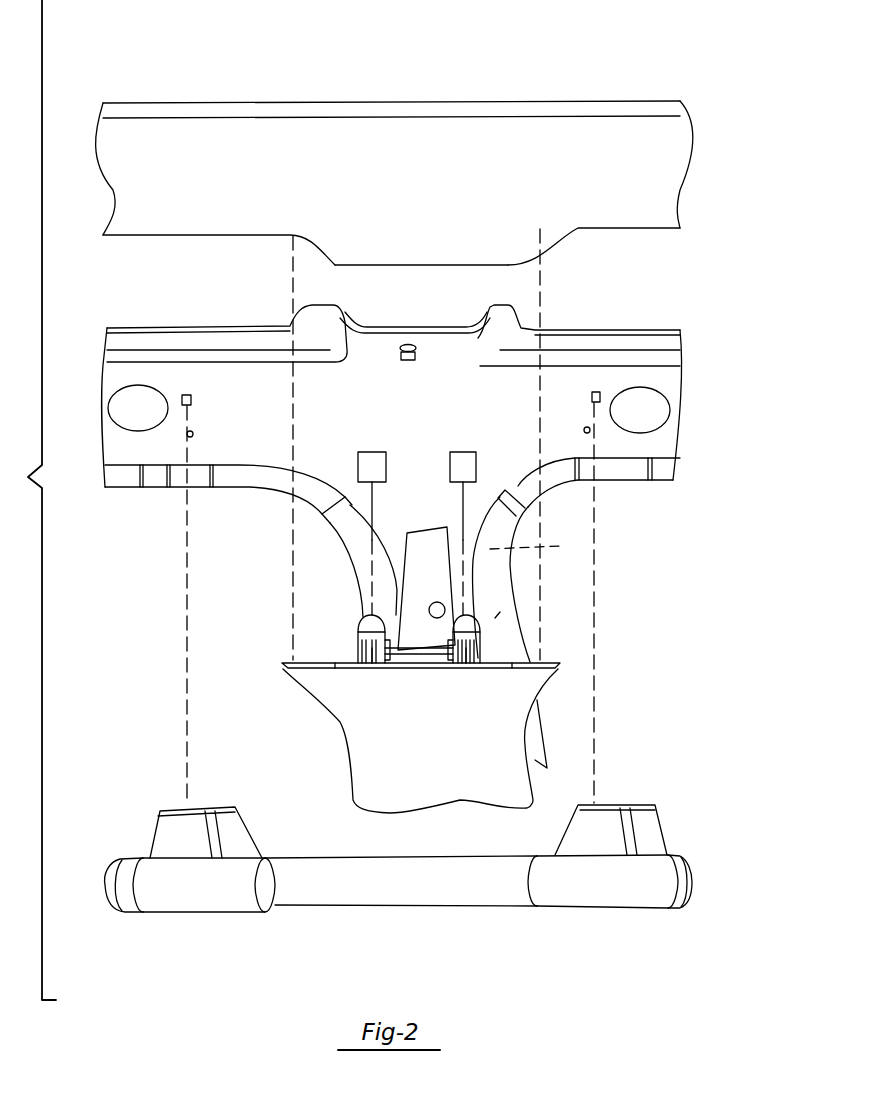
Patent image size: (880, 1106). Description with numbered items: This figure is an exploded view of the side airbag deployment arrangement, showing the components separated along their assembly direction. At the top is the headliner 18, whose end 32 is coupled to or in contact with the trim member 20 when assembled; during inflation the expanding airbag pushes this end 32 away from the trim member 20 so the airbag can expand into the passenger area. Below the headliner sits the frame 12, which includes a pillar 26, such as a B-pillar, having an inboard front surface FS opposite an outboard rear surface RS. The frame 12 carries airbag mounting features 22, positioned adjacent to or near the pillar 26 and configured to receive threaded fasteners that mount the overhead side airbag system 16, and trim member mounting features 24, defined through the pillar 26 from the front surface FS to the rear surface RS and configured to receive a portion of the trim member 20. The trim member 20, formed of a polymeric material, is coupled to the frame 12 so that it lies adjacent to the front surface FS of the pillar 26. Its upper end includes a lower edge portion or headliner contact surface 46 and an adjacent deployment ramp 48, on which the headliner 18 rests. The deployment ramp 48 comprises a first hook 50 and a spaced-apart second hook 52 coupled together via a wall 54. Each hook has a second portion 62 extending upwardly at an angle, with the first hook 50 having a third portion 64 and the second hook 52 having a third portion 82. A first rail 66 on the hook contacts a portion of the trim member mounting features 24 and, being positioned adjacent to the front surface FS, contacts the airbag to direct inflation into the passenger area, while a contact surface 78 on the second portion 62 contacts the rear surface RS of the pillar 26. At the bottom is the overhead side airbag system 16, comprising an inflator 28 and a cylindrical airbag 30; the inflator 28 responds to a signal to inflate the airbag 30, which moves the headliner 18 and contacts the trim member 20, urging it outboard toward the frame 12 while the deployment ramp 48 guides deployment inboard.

The frame 12 is at (427, 470).
The overhead side airbag system 16 is at (398, 888).
The headliner 18 is at (425, 204).
The trim member 20 is at (540, 790).
The airbag mounting features 22 is at (193, 403).
The trim member mounting features 24 is at (370, 452).
The pillar 26 is at (517, 536).
The inflator 28 is at (194, 912).
The airbag 30 is at (388, 908).
The end of the headliner 32 is at (425, 267).
The headliner contact surface 46 is at (412, 668).
The deployment ramp 48 is at (393, 625).
The first hook 50 is at (345, 606).
The second hook 52 is at (495, 631).
The wall 54 is at (403, 645).
The second portion 62 is at (357, 642).
The third portion 64 is at (355, 627).
The first rail 66 is at (357, 638).
The contact surface 78 is at (378, 645).
The third portion 82 is at (470, 614).
The rear surface RS is at (539, 550).
The front surface FS is at (495, 618).